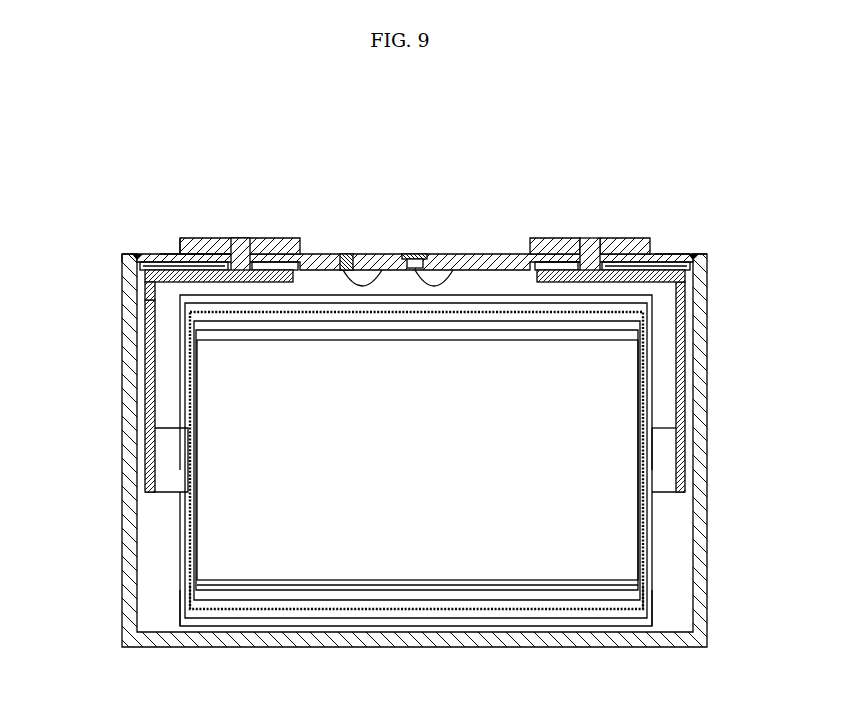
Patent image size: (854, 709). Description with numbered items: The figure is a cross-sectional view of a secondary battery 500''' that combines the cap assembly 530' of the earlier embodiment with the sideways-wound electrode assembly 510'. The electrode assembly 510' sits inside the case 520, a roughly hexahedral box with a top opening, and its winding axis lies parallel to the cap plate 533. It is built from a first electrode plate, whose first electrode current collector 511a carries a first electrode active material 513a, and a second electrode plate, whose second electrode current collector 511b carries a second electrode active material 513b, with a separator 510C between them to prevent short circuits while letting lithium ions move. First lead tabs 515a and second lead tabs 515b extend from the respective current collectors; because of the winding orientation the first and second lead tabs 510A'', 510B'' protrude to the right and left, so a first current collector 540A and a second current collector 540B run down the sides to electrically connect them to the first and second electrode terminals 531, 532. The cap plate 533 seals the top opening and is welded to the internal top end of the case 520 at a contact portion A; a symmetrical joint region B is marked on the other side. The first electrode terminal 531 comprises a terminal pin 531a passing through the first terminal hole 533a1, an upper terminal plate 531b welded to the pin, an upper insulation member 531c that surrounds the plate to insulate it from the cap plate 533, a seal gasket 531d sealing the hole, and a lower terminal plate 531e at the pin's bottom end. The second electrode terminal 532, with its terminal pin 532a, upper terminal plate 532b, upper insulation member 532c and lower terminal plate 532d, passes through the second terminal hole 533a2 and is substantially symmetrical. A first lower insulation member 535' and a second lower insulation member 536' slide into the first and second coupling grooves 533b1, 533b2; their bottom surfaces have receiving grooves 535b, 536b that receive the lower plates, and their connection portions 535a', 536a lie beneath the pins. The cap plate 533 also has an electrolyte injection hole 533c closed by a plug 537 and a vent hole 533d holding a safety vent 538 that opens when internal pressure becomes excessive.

The secondary battery 500''' is at (418, 411).
The electrode assembly 510' is at (415, 496).
The separator 510C is at (340, 594).
The first lead tabs 510A'' is at (735, 527).
The second lead tabs 510B'' is at (99, 527).
The first electrode current collector 511a is at (652, 594).
The first electrode active material 513a is at (652, 588).
The first lead tabs 515a is at (658, 473).
The second electrode current collector 511b is at (182, 594).
The second electrode active material 513b is at (185, 588).
The second lead tabs 515b is at (172, 474).
The case 520 is at (700, 424).
The cap assembly 530' is at (417, 215).
The first electrode terminal 531 is at (722, 189).
The terminal pin 531a is at (593, 238).
The upper terminal plate 531b is at (614, 240).
The upper insulation member 531c is at (645, 238).
The seal gasket 531d is at (651, 262).
The lower terminal plate 531e is at (673, 250).
The second electrode terminal 532 is at (232, 188).
The terminal pin 532a is at (242, 238).
The upper terminal plate 532b is at (252, 242).
The upper insulation member 532c is at (298, 238).
The lower terminal plate 532d is at (297, 264).
The cap plate 533 is at (494, 262).
The first terminal hole 533a1 is at (587, 250).
The second terminal hole 533a2 is at (232, 240).
The first coupling groove 533b1 is at (705, 262).
The second coupling groove 533b2 is at (136, 254).
The electrolyte injection hole 533c is at (381, 254).
The vent hole 533d is at (452, 254).
The first lower insulation member 535' is at (653, 270).
The first collector connection portion 535a' is at (555, 224).
The receiving groove 535b is at (627, 277).
The second lower insulation member 536' is at (178, 250).
The second collector connection portion 536a is at (233, 242).
The receiving groove 536b is at (143, 294).
The plug 537 is at (345, 254).
The safety vent 538 is at (414, 254).
The first current collector 540A is at (682, 354).
The second current collector 540B is at (153, 354).
The contact portion A is at (126, 253).
The region B is at (179, 245).